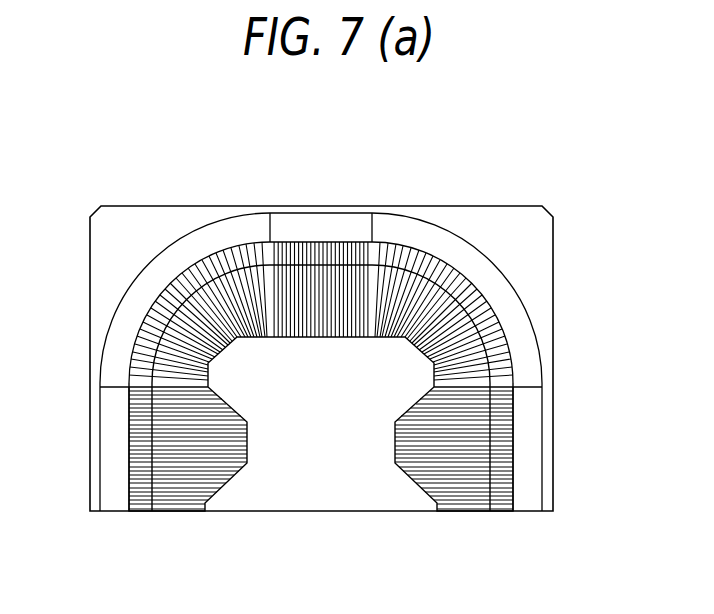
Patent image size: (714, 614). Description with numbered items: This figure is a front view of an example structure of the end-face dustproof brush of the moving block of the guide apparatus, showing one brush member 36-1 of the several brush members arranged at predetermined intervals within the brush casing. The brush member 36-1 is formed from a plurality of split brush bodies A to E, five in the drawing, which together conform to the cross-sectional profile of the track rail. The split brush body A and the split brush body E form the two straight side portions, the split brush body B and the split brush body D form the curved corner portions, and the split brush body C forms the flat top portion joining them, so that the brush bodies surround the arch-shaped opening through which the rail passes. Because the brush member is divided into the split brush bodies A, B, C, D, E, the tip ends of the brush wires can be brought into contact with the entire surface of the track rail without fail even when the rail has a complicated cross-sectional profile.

The brush member 36-1 is at (342, 213).
The split brush body A is at (110, 460).
The split brush body B is at (137, 298).
The split brush body C is at (309, 221).
The split brush body D is at (475, 262).
The split brush body E is at (530, 457).